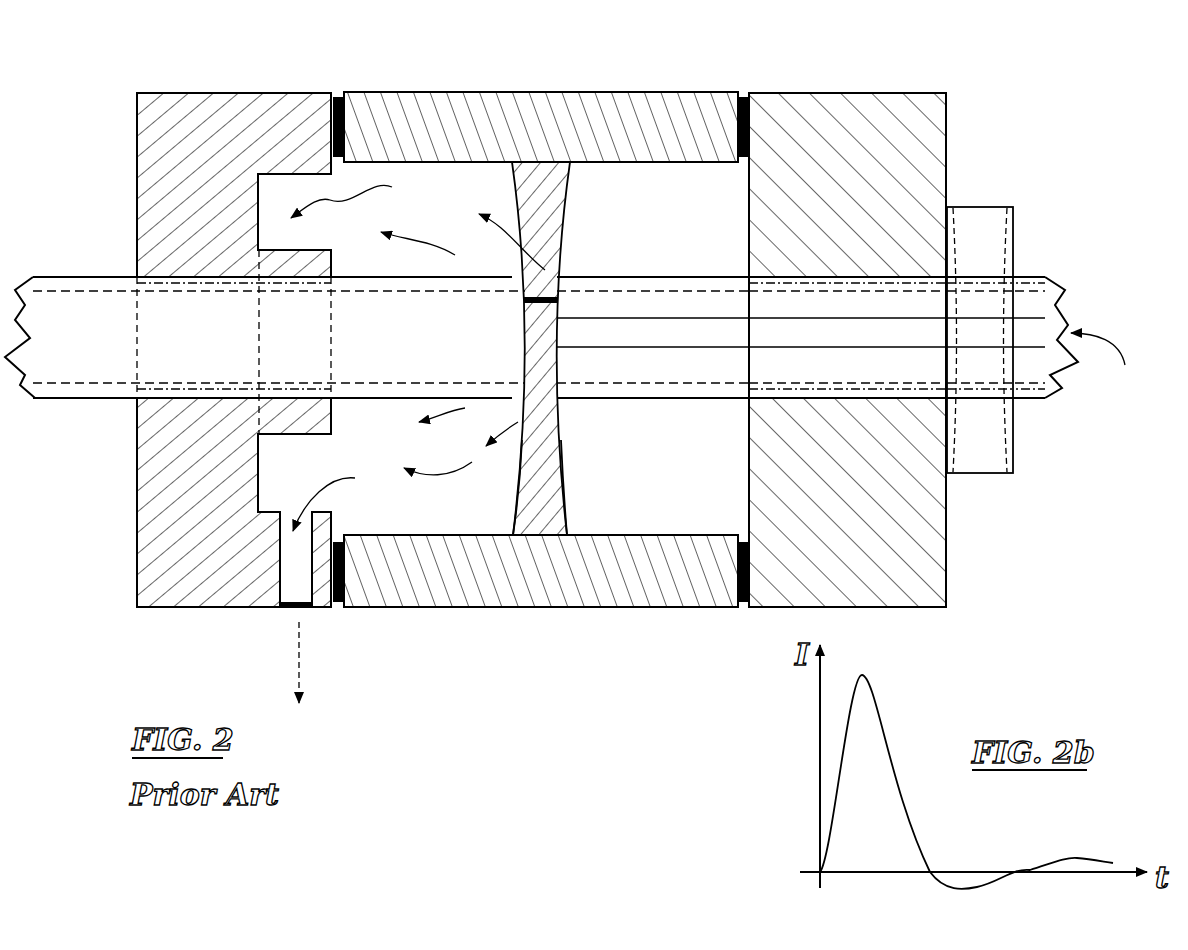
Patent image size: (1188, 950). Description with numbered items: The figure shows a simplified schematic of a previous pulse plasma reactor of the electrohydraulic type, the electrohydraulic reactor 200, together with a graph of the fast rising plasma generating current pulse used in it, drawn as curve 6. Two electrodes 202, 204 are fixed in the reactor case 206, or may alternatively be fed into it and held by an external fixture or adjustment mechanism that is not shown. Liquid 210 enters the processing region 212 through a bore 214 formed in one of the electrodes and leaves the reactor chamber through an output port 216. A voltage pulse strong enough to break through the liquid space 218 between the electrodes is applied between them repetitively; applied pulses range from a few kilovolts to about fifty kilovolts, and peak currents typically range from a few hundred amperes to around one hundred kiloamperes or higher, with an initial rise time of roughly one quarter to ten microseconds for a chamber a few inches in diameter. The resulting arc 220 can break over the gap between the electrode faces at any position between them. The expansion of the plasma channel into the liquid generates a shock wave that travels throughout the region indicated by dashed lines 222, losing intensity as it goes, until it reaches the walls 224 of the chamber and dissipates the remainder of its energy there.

In FIG. 2, the electrohydraulic reactor 200 is at (596, 628).
In FIG. 2, the electrode 202 is at (1042, 273).
In FIG. 2, the electrode 204 is at (90, 398).
In FIG. 2, the reactor case 206 is at (386, 91).
In FIG. 2, the liquid 210 is at (1117, 391).
In FIG. 2, the processing region 212 is at (690, 197).
In FIG. 2, the bore 214 is at (618, 332).
In FIG. 2, the output port 216 is at (283, 607).
In FIG. 2, the liquid space 218 is at (528, 335).
In FIG. 2, the arc 220 is at (556, 262).
In FIG. 2, the dashed lines 222 is at (523, 458).
In FIG. 2, the walls 224 is at (441, 163).
In FIG. 2b, the current waveform 6 is at (888, 801).